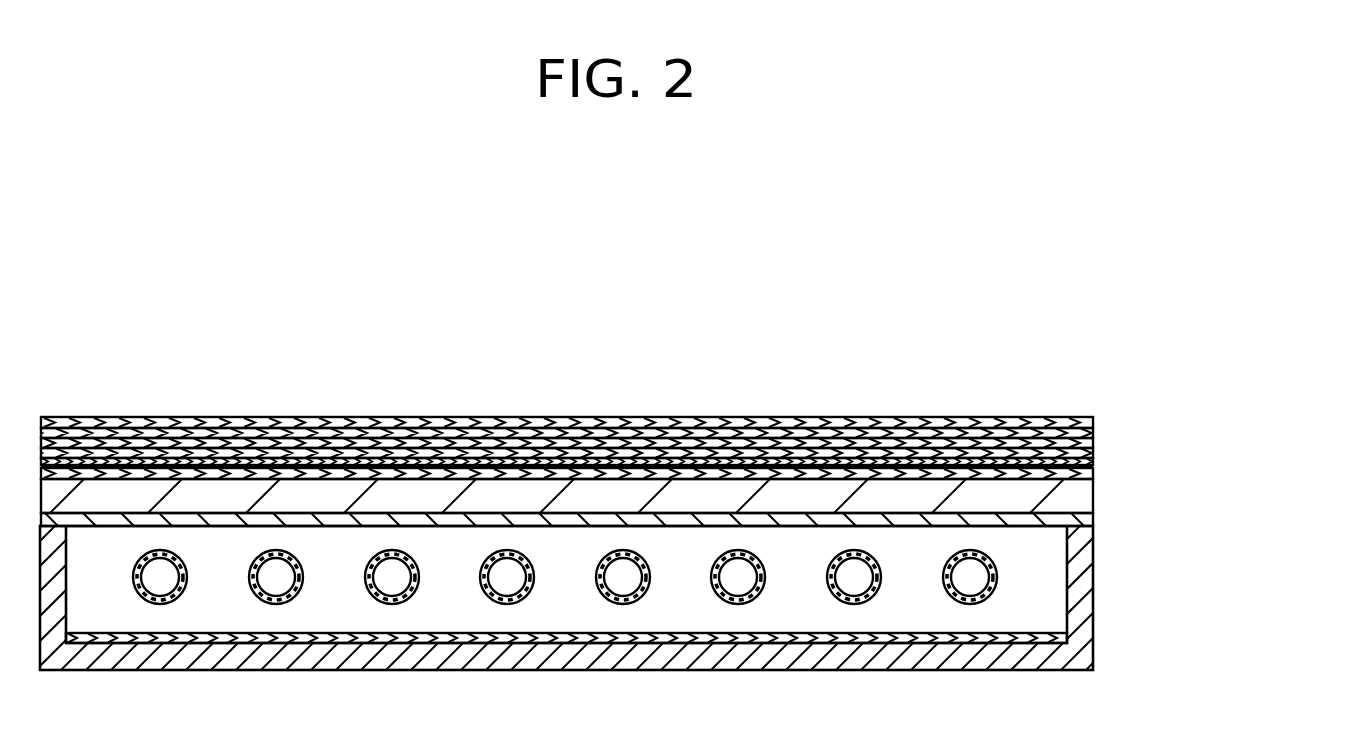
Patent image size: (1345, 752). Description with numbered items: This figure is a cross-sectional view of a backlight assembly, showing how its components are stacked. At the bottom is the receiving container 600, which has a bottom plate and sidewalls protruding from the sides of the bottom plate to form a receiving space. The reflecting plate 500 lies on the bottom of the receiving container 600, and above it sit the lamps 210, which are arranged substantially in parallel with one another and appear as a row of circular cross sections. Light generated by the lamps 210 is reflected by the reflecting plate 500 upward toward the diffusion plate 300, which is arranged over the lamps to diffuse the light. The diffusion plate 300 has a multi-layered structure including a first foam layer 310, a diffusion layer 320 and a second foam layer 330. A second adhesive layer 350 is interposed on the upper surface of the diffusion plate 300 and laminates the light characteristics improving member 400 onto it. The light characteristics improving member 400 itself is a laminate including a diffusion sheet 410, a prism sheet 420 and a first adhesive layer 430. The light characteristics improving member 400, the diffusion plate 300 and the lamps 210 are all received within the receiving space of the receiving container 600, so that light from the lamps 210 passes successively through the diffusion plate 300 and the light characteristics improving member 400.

The lamps 210 is at (997, 575).
The diffusion plate 300 is at (660, 505).
The first foam layer 310 is at (1095, 523).
The diffusion layer 320 is at (1080, 497).
The second foam layer 330 is at (1095, 473).
The second adhesive layer 350 is at (1095, 460).
The light characteristics improving member 400 is at (688, 391).
The diffusion sheet 410 is at (1095, 448).
The prism sheet 420 is at (1095, 425).
The first adhesive layer 430 is at (1095, 437).
The reflecting plate 500 is at (1018, 633).
The receiving container 600 is at (1085, 645).